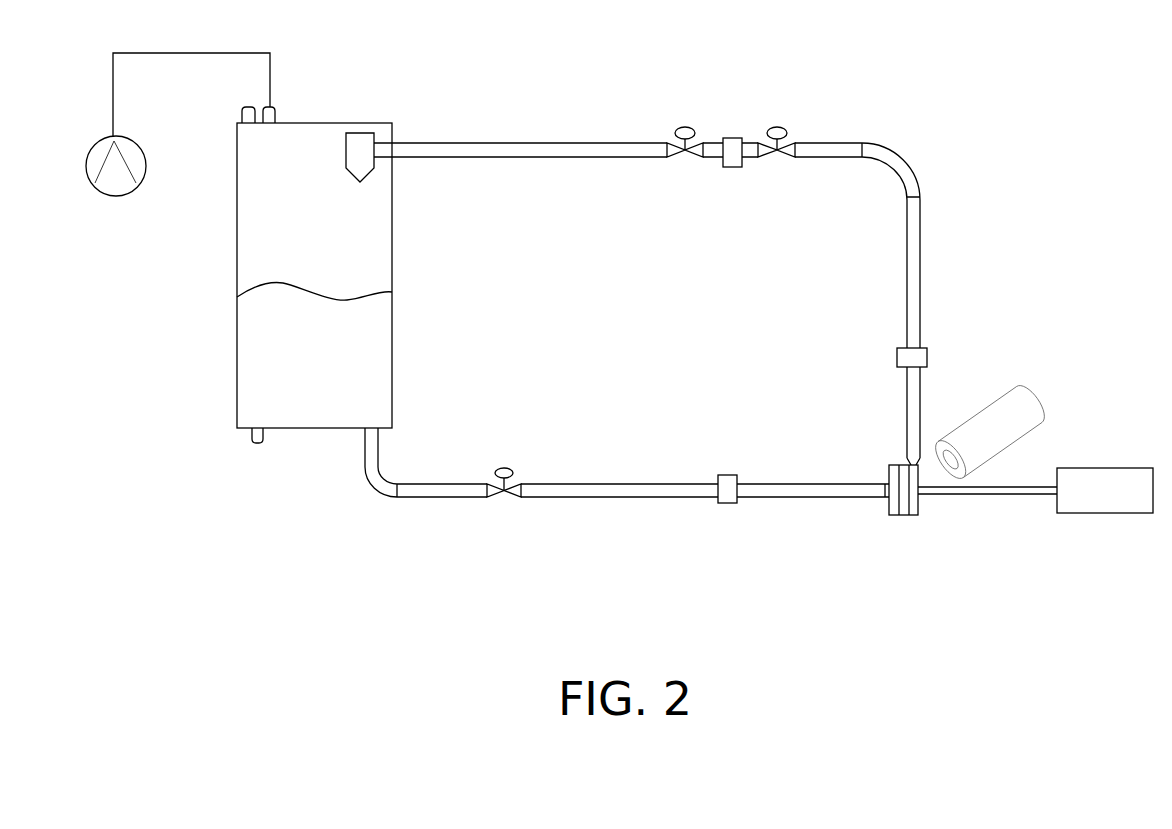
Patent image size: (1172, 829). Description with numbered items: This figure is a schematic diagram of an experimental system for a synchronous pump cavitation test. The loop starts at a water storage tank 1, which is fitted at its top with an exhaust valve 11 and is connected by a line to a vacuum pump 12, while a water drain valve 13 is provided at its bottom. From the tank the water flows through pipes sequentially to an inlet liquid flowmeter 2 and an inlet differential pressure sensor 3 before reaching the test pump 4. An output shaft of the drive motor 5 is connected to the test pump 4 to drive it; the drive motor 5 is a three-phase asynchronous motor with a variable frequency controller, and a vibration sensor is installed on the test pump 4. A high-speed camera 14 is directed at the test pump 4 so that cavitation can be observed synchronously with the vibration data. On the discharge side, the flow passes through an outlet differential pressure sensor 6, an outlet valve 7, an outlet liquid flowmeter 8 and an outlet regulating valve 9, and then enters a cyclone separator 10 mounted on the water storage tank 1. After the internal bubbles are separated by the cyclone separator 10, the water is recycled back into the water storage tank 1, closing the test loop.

The water storage tank 1 is at (235, 236).
The inlet liquid flowmeter 2 is at (505, 505).
The inlet differential pressure sensor 3 is at (727, 508).
The test pump 4 is at (903, 519).
The drive motor 5 is at (1100, 516).
The outlet differential pressure sensor 6 is at (927, 360).
The outlet valve 7 is at (776, 126).
The outlet liquid flowmeter 8 is at (734, 169).
The outlet regulating valve 9 is at (686, 126).
The cyclone separator 10 is at (361, 140).
The exhaust valve 11 is at (243, 104).
The vacuum pump 12 is at (116, 184).
The water drain valve 13 is at (258, 447).
The high-speed camera 14 is at (1030, 406).